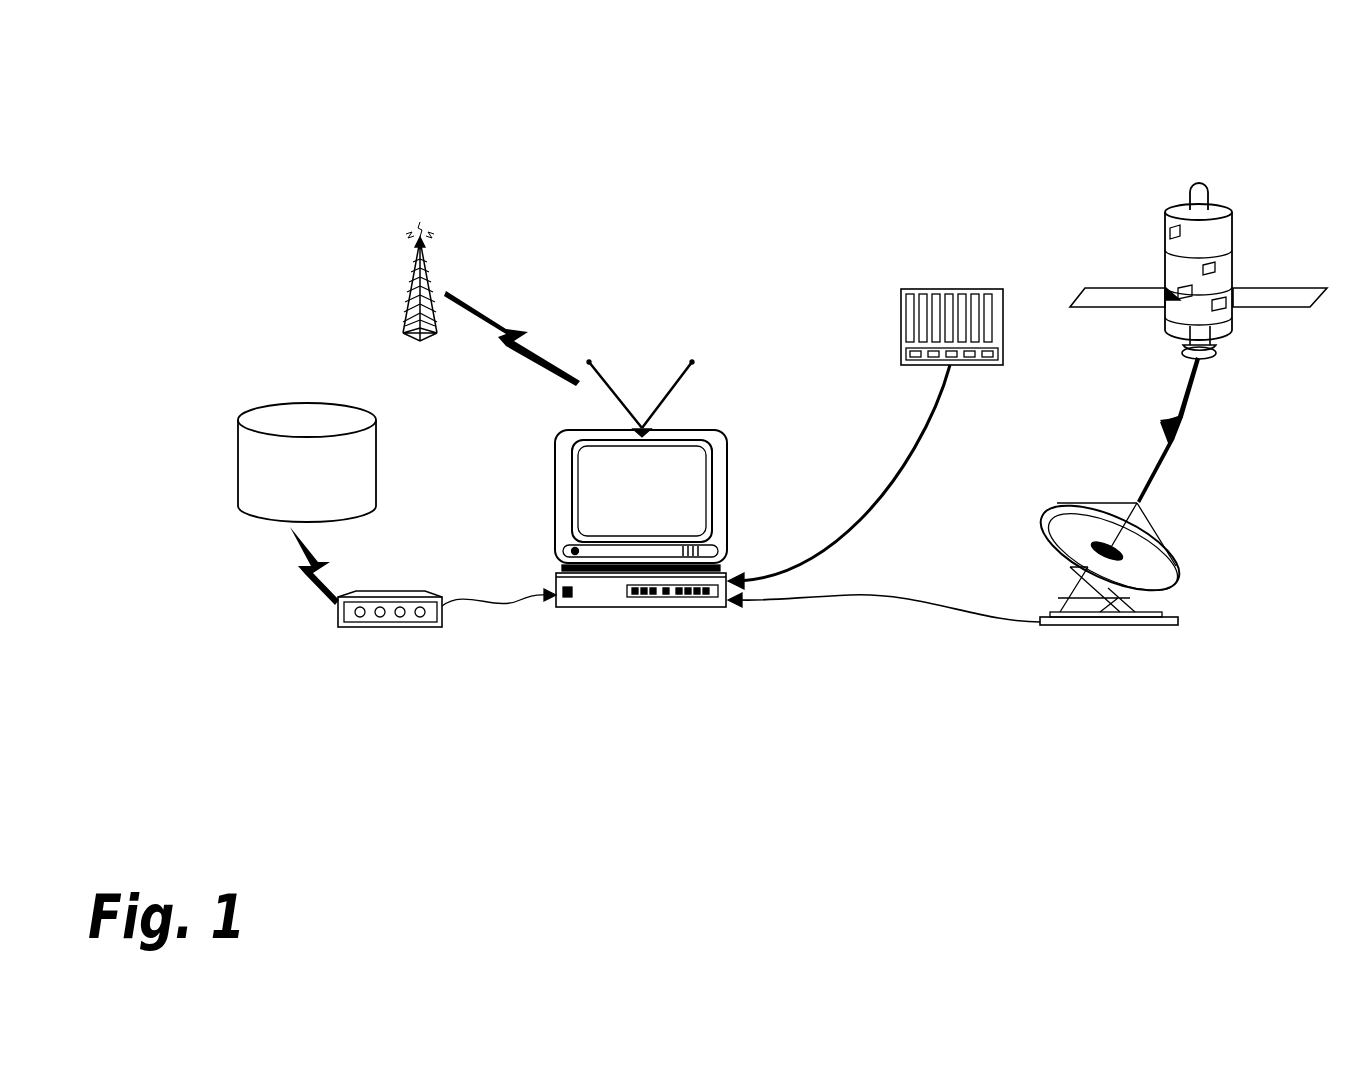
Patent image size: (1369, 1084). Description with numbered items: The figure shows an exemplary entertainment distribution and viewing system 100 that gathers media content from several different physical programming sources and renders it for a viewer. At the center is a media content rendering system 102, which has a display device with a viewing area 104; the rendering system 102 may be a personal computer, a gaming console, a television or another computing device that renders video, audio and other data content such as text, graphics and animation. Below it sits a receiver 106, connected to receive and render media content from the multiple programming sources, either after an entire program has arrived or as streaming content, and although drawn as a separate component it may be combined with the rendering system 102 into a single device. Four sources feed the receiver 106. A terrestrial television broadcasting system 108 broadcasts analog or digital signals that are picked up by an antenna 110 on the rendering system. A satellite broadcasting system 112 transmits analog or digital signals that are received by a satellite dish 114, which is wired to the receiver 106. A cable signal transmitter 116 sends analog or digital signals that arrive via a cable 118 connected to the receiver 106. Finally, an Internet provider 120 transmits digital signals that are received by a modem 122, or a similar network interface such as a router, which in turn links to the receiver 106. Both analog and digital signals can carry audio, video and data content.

The entertainment distribution and viewing system 100 is at (588, 168).
The media content rendering system 102 is at (722, 430).
The viewing area 104 is at (694, 484).
The receiver 106 is at (590, 610).
The terrestrial television broadcasting system 108 is at (415, 266).
The antenna 110 is at (604, 385).
The satellite broadcasting system 112 is at (1168, 222).
The satellite dish 114 is at (1176, 578).
The cable signal transmitter 116 is at (950, 290).
The cable 118 is at (880, 490).
The Internet provider 120 is at (325, 412).
The modem 122 is at (390, 590).